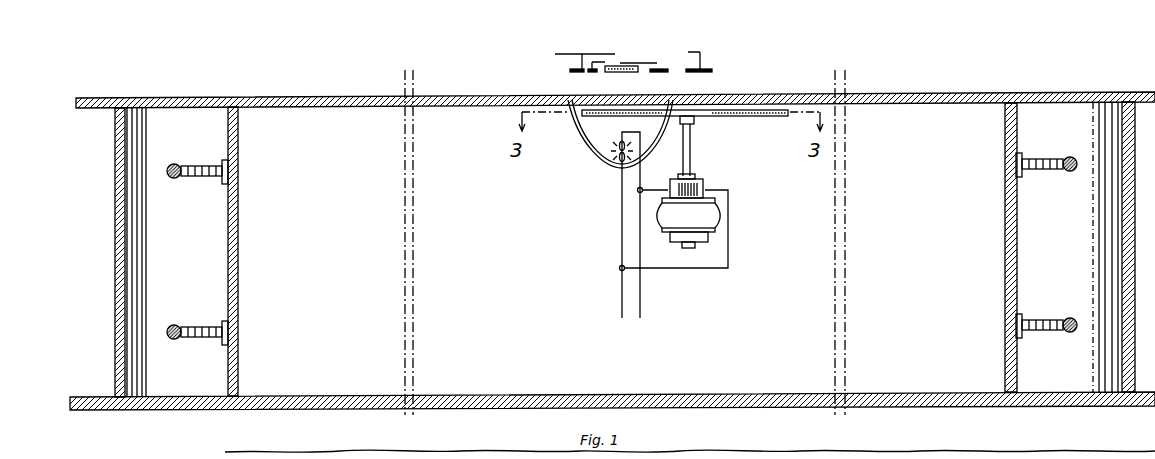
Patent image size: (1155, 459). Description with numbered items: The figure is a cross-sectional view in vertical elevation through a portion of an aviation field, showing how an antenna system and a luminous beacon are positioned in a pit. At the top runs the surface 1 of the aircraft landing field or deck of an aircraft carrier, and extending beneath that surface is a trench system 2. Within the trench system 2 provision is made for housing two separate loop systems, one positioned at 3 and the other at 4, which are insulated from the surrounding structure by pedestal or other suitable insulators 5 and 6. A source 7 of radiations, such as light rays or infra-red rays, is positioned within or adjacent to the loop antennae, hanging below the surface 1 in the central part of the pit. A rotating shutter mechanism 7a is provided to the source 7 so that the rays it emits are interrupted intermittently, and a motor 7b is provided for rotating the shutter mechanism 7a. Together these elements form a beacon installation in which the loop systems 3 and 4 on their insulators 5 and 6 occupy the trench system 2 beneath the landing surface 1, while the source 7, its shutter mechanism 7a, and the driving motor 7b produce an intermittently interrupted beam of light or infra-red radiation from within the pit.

The surface of the aircraft landing field 1 is at (345, 96).
The trench system 2 is at (200, 265).
The loop system 3 is at (179, 163).
The loop system 4 is at (178, 324).
The insulator 5 is at (198, 178).
The insulator 6 is at (207, 338).
The source of radiations 7 is at (603, 130).
The rotating shutter mechanism 7a is at (702, 118).
The motor 7b is at (718, 223).